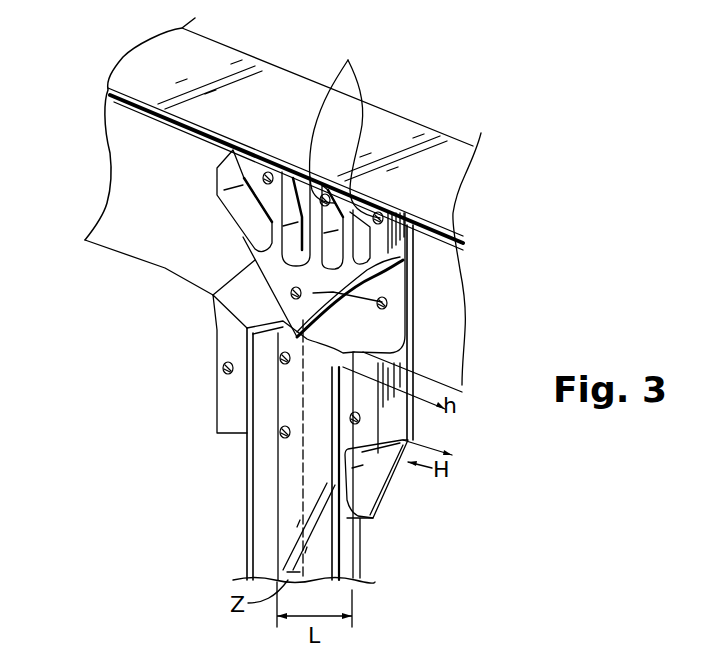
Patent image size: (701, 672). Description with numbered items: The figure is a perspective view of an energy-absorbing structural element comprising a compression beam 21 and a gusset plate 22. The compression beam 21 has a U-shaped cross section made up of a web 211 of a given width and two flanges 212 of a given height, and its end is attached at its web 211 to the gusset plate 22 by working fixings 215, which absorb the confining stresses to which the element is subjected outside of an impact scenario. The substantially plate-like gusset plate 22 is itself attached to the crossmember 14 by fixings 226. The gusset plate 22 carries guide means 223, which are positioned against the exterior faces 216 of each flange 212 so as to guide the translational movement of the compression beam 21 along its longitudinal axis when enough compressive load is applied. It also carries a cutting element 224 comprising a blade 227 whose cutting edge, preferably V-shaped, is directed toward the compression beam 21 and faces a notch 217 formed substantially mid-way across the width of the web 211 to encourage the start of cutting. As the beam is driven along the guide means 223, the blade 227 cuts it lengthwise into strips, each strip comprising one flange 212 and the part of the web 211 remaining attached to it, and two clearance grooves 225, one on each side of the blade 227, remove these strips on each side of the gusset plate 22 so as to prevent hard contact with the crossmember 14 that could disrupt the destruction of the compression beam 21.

The crossmember 14 is at (127, 160).
The gusset plate 22 is at (200, 158).
The fixings 226 is at (348, 60).
The clearance groove 225 is at (395, 282).
The blade 227 is at (213, 293).
The notch 217 is at (215, 312).
The cutting element 224 is at (382, 303).
The guide means 223 is at (215, 377).
The working fixings 215 is at (277, 432).
The compression beam 21 is at (232, 476).
The web 211 is at (293, 497).
The flange 212 is at (263, 542).
The exterior face 216 is at (360, 518).